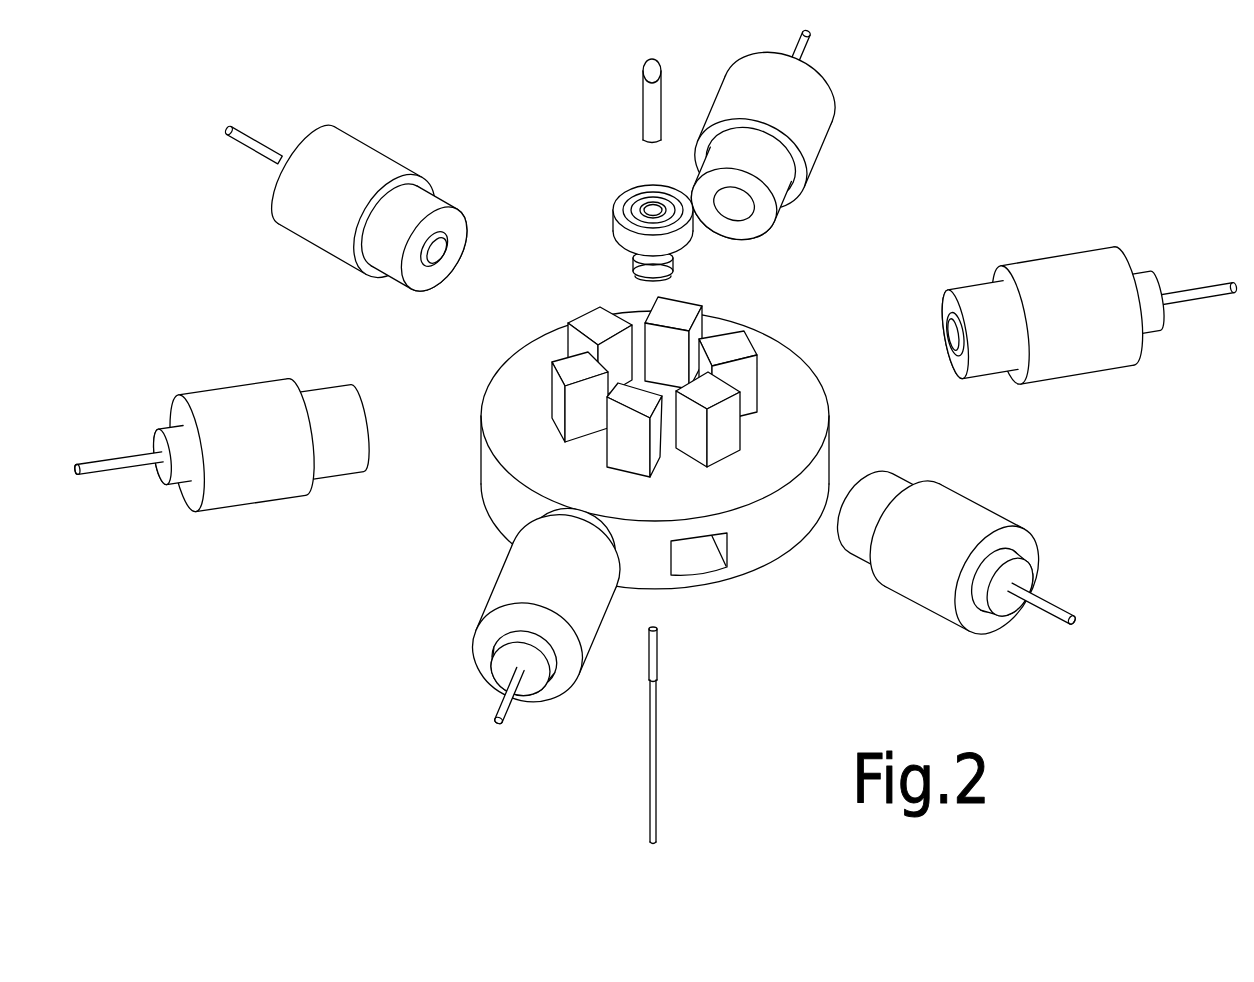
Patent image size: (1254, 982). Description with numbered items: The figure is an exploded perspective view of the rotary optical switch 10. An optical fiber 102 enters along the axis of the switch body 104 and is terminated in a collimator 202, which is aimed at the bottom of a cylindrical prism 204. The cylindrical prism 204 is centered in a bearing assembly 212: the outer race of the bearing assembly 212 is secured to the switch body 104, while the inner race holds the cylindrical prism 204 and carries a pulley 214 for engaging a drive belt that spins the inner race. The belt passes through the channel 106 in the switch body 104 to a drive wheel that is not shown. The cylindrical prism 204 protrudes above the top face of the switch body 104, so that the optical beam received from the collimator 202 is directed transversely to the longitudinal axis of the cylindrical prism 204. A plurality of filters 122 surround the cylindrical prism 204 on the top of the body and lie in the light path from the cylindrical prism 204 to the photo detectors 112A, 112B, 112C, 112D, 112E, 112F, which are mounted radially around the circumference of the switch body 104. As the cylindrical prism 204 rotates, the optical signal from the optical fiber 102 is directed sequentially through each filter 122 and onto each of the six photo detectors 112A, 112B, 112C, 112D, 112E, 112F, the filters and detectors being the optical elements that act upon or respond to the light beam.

The rotary optical switch 10 is at (328, 626).
The optical fiber 102 is at (656, 753).
The switch body 104 is at (788, 550).
The channel 106 is at (709, 563).
The photo detector 112A is at (1105, 357).
The photo detector 112B is at (813, 96).
The photo detector 112C is at (303, 222).
The photo detector 112D is at (225, 403).
The photo detector 112E is at (502, 597).
The photo detector 112F is at (980, 518).
The filter 122 is at (632, 407).
The collimator 202 is at (657, 647).
The cylindrical prism 204 is at (650, 90).
The bearing assembly 212 is at (622, 228).
The pulley 214 is at (648, 263).